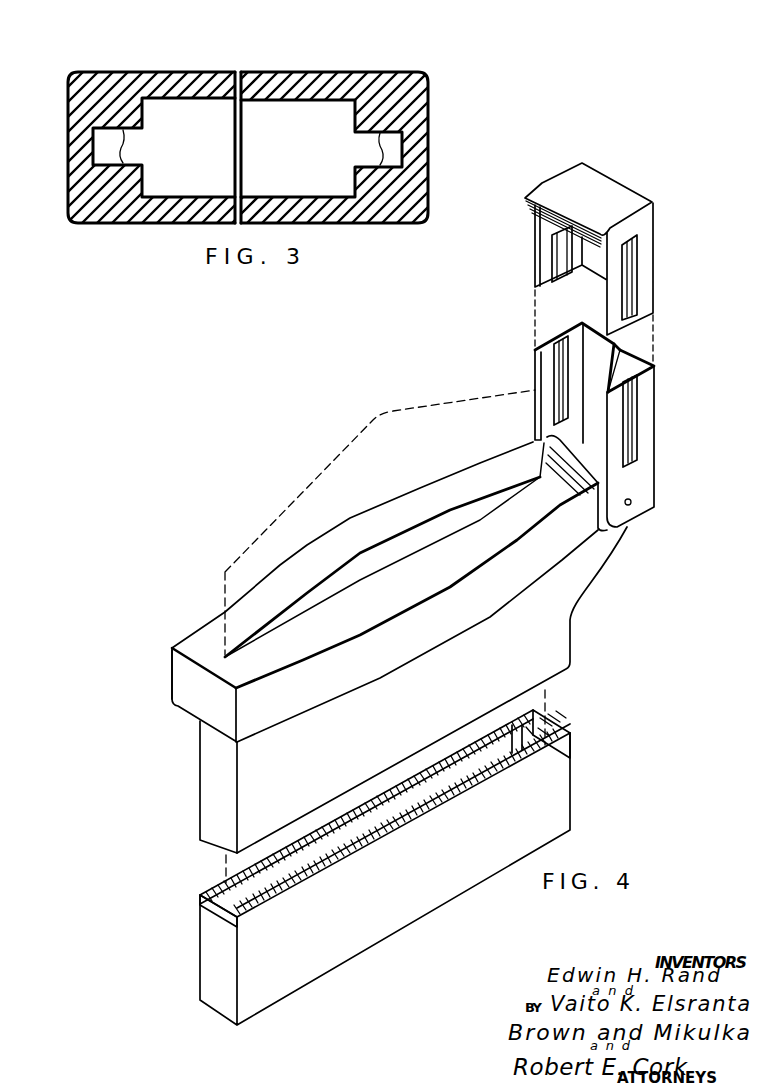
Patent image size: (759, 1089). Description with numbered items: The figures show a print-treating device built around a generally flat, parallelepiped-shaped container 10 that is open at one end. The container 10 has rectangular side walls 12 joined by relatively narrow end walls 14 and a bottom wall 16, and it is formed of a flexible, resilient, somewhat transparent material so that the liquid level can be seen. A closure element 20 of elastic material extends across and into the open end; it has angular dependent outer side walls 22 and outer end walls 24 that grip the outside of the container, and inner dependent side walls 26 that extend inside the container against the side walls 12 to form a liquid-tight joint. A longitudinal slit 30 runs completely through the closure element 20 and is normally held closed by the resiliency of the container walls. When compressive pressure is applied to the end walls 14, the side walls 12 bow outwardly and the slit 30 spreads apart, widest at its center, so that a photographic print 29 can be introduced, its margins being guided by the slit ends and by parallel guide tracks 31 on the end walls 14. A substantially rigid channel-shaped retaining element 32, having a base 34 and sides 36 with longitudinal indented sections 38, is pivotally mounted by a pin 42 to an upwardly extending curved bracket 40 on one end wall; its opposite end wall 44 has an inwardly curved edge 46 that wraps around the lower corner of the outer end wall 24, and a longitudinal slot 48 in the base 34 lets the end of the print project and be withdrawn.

In FIG. 4, the container 10 is at (199, 772).
In FIG. 3, the side walls 12 is at (258, 72).
In FIG. 4, the side walls 12 is at (418, 793).
In FIG. 3, the end walls 14 is at (71, 150).
In FIG. 4, the end walls 14 is at (552, 720).
In FIG. 3, the bottom wall 16 is at (193, 133).
In FIG. 4, the closure element 20 is at (395, 636).
In FIG. 4, the outer side walls 22 is at (411, 546).
In FIG. 4, the outer end walls 24 is at (192, 689).
In FIG. 4, the inner dependent side walls 26 is at (405, 560).
In FIG. 4, the photographic print 29 is at (365, 452).
In FIG. 4, the longitudinal slit 30 is at (357, 568).
In FIG. 3, the parallel guide tracks 31 is at (125, 143).
In FIG. 4, the retaining element 32 is at (605, 422).
In FIG. 4, the base 34 is at (644, 354).
In FIG. 4, the sides 36 is at (546, 367).
In FIG. 4, the longitudinal indented sections 38 is at (560, 340).
In FIG. 4, the curved bracket 40 is at (613, 548).
In FIG. 4, the pin 42 is at (631, 504).
In FIG. 4, the end wall 44 is at (571, 251).
In FIG. 4, the inwardly curved edge 46 is at (557, 229).
In FIG. 4, the longitudinal slot 48 is at (628, 338).